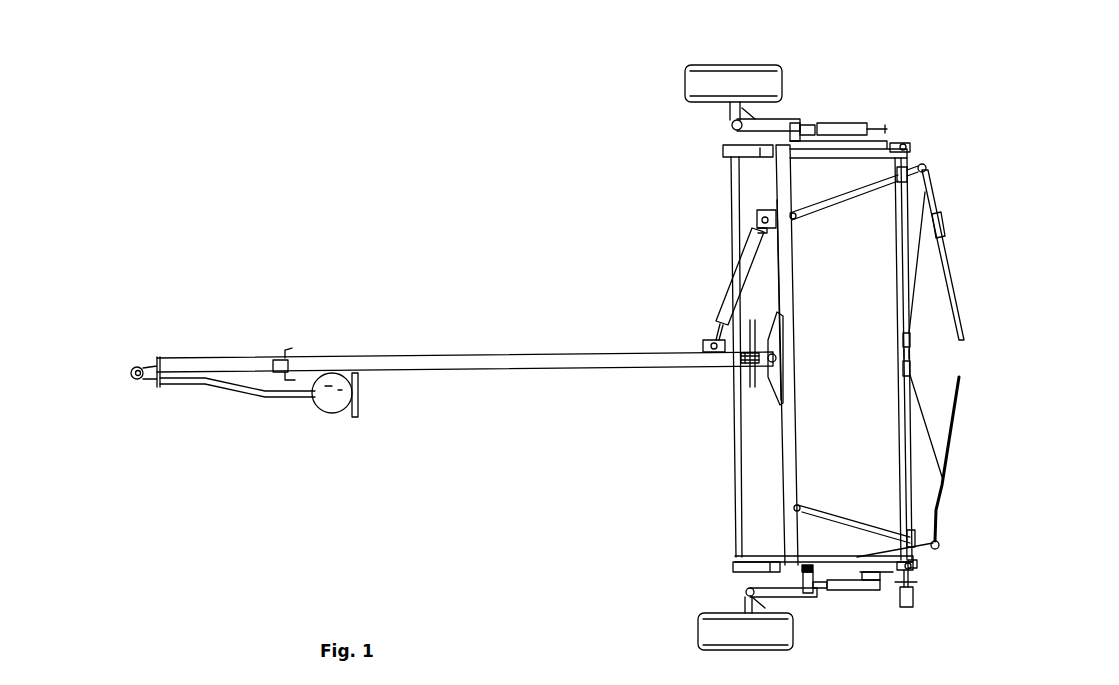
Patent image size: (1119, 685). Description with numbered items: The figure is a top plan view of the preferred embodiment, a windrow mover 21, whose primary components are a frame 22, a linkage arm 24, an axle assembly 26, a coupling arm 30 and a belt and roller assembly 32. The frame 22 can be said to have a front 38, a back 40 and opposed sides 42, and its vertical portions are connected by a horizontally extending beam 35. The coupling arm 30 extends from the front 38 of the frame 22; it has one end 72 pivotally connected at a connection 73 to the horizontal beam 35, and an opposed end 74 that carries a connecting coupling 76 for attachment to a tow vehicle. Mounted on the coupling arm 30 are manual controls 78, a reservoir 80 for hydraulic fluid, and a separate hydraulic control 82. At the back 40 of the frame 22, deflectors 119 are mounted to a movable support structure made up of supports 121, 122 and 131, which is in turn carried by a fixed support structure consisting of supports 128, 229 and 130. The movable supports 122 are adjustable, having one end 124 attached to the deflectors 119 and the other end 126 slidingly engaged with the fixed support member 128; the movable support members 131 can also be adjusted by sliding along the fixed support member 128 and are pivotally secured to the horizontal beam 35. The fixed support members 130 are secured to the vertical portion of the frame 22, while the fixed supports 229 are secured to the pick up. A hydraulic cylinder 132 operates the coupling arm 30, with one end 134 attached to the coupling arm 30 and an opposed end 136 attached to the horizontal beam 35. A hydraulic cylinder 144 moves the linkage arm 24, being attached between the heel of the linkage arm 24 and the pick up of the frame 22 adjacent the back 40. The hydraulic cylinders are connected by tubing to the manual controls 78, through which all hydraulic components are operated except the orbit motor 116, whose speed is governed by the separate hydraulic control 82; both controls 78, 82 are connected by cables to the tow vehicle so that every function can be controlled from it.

The windrow mover 21 is at (975, 532).
The frame 22 is at (790, 462).
The linkage arm 24 is at (760, 122).
The axle assembly 26 is at (737, 125).
The coupling arm 30 is at (480, 363).
The belt and roller assembly 32 is at (762, 448).
The horizontal beam 35 is at (788, 497).
The front 38 is at (735, 435).
The back 40 is at (912, 357).
The opposed sides 42 is at (805, 127).
The one end 72 is at (657, 360).
The connection 73 is at (770, 370).
The opposed end 74 is at (175, 372).
The connecting coupling 76 is at (140, 377).
The manual controls 78 is at (745, 358).
The reservoir 80 is at (327, 393).
The hydraulic control 82 is at (277, 365).
The orbit motor 116 is at (907, 600).
The deflectors 119 is at (943, 245).
The support 121 is at (898, 175).
The movable support 122 is at (920, 305).
The one end 124 is at (937, 222).
The other end 126 is at (910, 342).
The fixed support member 128 is at (912, 405).
The fixed support member 130 is at (912, 537).
The movable support member 131 is at (913, 533).
The hydraulic cylinder 132 is at (752, 250).
The one end 134 is at (713, 340).
The opposed end 136 is at (758, 213).
The hydraulic cylinder 144 is at (828, 125).
The fixed support 229 is at (905, 147).